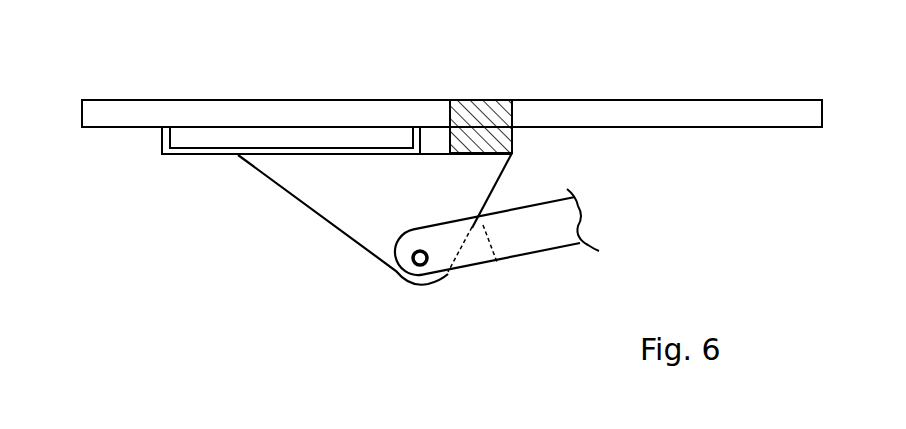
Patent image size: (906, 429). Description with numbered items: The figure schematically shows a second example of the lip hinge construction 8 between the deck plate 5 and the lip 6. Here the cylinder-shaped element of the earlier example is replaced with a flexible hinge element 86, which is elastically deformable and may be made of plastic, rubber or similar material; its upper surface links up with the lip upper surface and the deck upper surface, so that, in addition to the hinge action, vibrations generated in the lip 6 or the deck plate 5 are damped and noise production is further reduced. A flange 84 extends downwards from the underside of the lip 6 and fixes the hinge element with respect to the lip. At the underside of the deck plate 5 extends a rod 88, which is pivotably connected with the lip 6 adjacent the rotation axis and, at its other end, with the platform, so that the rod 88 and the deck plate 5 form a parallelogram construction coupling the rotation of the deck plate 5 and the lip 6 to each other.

The deck plate 5 is at (670, 110).
The lip 6 is at (122, 110).
The lip hinge construction 8 is at (268, 200).
The flange 84 is at (330, 228).
The flexible hinge element 86 is at (481, 100).
The rod 88 is at (565, 248).